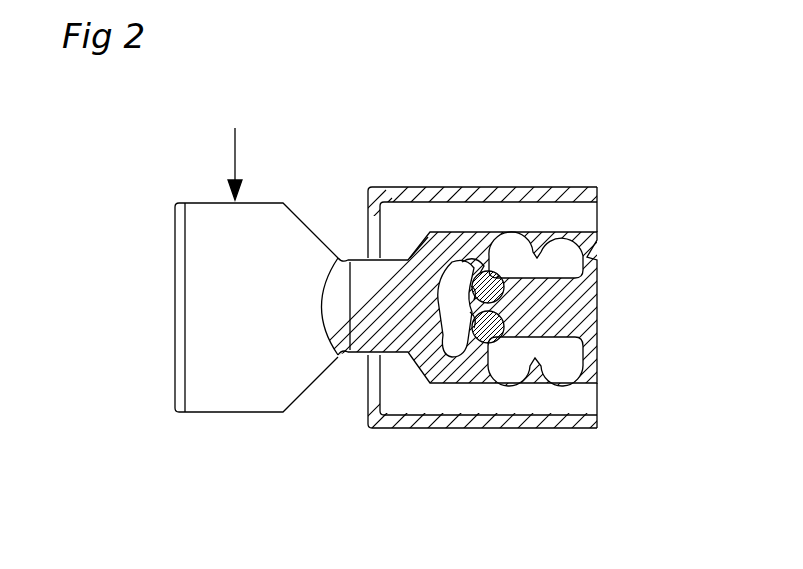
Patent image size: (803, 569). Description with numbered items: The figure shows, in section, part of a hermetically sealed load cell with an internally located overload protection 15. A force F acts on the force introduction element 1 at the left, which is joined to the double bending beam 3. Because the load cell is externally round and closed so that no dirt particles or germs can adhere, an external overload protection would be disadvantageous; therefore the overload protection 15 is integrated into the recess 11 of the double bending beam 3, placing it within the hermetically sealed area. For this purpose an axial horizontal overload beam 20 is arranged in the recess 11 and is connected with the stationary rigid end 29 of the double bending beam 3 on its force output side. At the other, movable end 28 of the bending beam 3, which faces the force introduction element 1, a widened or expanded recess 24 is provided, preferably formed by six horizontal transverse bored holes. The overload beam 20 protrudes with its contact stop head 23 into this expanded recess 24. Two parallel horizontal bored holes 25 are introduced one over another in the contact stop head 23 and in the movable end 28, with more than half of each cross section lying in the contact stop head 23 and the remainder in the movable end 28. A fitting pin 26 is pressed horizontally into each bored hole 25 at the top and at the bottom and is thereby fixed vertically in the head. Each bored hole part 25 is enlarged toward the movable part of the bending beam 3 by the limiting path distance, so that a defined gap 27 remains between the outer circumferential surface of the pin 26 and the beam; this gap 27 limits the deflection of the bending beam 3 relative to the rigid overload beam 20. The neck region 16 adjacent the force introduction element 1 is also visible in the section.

The force introduction element 1 is at (213, 388).
The double bending beam 3 is at (471, 248).
The recess 11 is at (597, 400).
The overload protection 15 is at (460, 262).
The neck 16 is at (398, 302).
The overload beam 20 is at (556, 302).
The contact stop head 23 is at (420, 250).
The expanded recess 24 is at (457, 303).
The horizontal bored holes 25 is at (500, 292).
The fitting pin 26 is at (497, 340).
The defined gap 27 is at (483, 262).
The movable end 28 is at (468, 322).
The stationary rigid end 29 is at (593, 253).
The force F is at (247, 162).